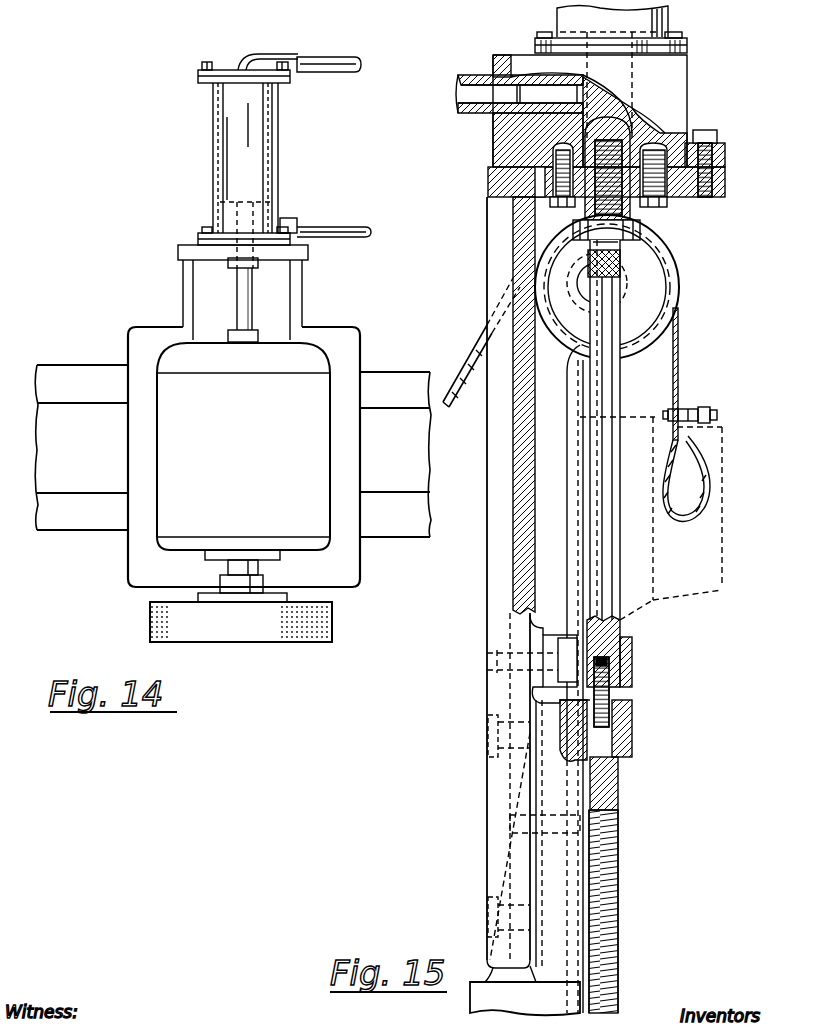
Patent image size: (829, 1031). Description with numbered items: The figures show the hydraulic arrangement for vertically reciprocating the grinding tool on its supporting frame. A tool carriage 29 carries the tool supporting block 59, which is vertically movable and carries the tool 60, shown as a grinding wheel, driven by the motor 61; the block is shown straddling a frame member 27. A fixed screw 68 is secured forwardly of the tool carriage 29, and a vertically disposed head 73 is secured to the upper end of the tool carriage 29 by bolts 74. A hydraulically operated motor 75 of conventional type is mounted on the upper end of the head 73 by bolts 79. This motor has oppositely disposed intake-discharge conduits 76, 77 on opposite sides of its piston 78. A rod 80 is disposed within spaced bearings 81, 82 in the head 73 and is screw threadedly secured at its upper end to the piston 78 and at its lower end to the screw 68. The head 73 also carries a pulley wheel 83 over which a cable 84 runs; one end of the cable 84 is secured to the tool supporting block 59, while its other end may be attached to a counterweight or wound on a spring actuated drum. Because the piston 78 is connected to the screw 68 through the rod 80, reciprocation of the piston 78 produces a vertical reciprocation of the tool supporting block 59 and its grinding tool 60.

In FIG. 14, the frame rail 27 is at (97, 459).
In FIG. 15, the tool carriage 29 is at (483, 1000).
In FIG. 14, the tool supporting block 59 is at (343, 348).
In FIG. 15, the tool supporting block 59 is at (682, 598).
In FIG. 14, the tool 60 is at (230, 636).
In FIG. 14, the motor 61 is at (250, 469).
In FIG. 15, the fixed screw 68 is at (607, 890).
In FIG. 15, the head 73 is at (493, 583).
In FIG. 15, the bolts 74 is at (487, 655).
In FIG. 14, the hydraulically operated motor 75 is at (240, 162).
In FIG. 15, the hydraulically operated motor 75 is at (572, 23).
In FIG. 14, the intake-discharge conduit 76 is at (333, 72).
In FIG. 14, the intake-discharge conduit 77 is at (325, 222).
In FIG. 15, the intake-discharge conduit 77 is at (463, 97).
In FIG. 14, the piston 78 is at (247, 193).
In FIG. 15, the piston 78 is at (665, 18).
In FIG. 15, the bolts 79 is at (550, 188).
In FIG. 14, the rod 80 is at (245, 299).
In FIG. 15, the rod 80 is at (605, 397).
In FIG. 15, the bearing 81 is at (640, 143).
In FIG. 15, the bearing 82 is at (633, 655).
In FIG. 15, the pulley wheel 83 is at (667, 270).
In FIG. 15, the cable 84 is at (677, 346).